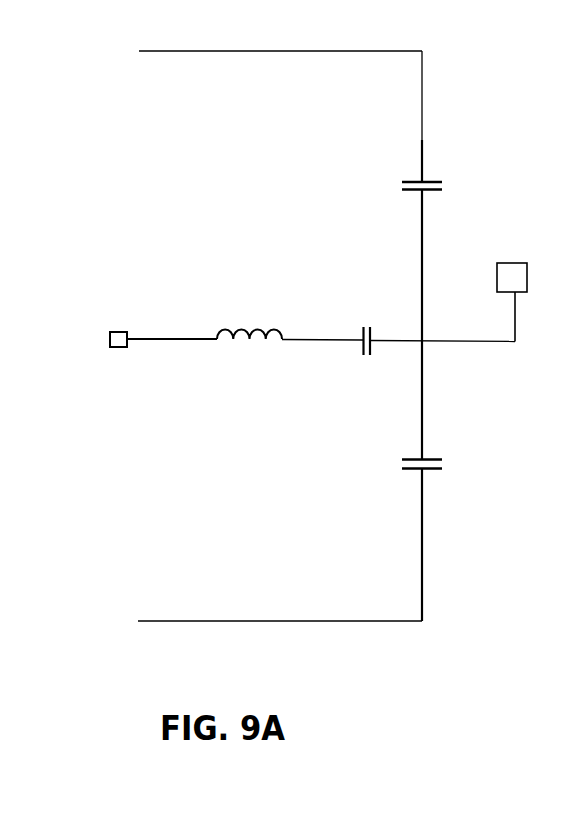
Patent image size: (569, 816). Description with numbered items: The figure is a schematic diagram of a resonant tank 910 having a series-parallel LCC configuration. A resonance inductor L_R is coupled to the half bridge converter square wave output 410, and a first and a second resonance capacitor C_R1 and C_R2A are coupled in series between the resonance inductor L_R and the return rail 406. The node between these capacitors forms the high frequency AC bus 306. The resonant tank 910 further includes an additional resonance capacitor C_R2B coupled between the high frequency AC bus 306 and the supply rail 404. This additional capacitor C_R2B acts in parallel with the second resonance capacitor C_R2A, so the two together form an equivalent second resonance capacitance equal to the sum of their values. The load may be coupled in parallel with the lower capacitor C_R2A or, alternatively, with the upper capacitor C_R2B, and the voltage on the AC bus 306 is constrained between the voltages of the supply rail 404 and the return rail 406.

The supply rail 404 is at (280, 41).
The return rail 406 is at (280, 633).
The half bridge converter square wave output 410 is at (113, 320).
The high frequency AC bus 306 is at (532, 260).
The resonant tank 910 is at (300, 438).